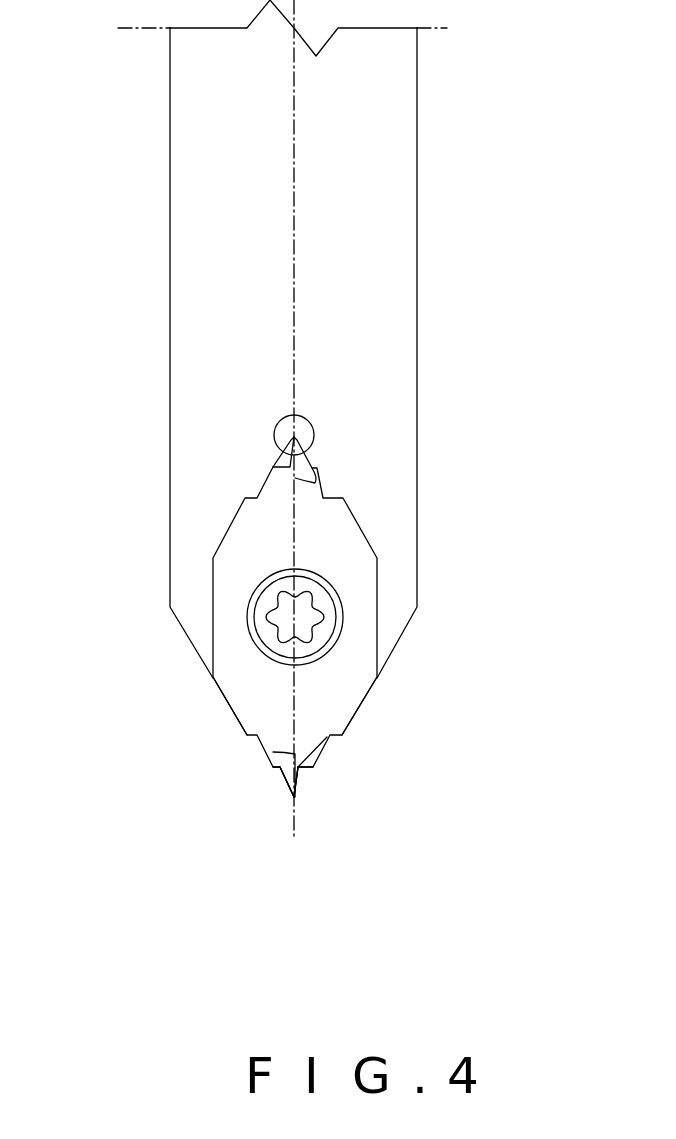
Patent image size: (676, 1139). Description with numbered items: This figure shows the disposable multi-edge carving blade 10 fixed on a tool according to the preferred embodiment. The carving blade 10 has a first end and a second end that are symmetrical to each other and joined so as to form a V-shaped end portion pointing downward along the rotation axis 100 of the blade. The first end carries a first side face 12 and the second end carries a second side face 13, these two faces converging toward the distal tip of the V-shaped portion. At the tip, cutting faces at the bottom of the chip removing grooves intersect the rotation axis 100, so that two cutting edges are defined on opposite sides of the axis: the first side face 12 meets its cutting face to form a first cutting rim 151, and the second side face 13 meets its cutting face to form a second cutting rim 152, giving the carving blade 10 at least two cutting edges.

The disposable multi-edge carving blade 10 is at (240, 563).
The first side face 12 is at (365, 703).
The second side face 13 is at (232, 713).
The rotation axis 100 is at (297, 722).
The first cutting rim 151 is at (294, 797).
The second cutting rim 152 is at (294, 797).